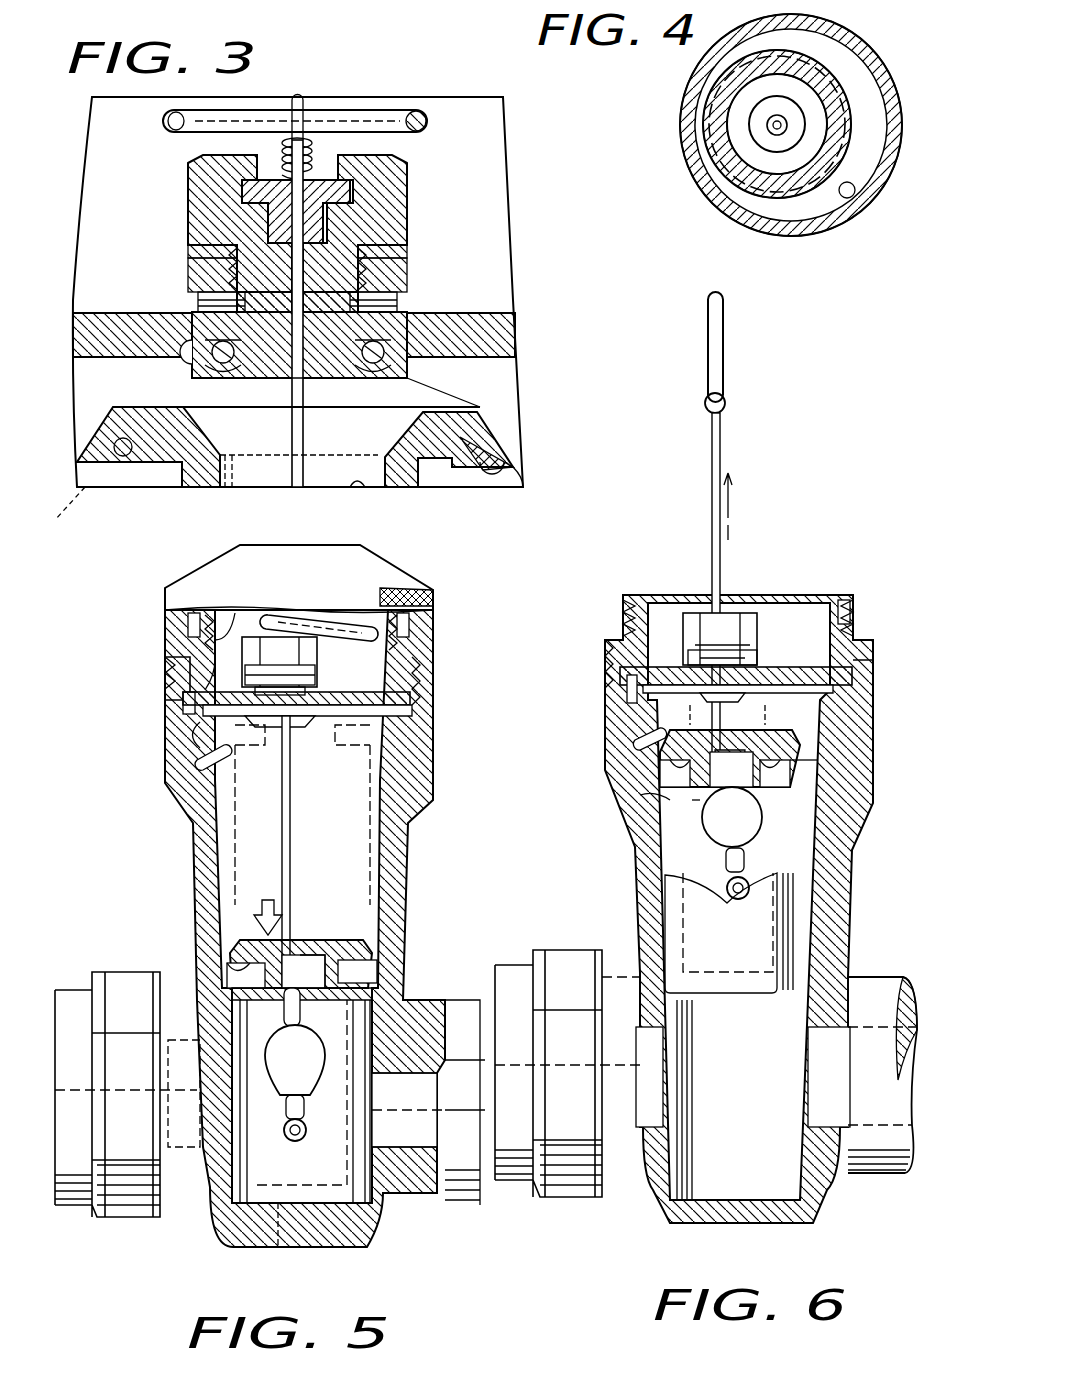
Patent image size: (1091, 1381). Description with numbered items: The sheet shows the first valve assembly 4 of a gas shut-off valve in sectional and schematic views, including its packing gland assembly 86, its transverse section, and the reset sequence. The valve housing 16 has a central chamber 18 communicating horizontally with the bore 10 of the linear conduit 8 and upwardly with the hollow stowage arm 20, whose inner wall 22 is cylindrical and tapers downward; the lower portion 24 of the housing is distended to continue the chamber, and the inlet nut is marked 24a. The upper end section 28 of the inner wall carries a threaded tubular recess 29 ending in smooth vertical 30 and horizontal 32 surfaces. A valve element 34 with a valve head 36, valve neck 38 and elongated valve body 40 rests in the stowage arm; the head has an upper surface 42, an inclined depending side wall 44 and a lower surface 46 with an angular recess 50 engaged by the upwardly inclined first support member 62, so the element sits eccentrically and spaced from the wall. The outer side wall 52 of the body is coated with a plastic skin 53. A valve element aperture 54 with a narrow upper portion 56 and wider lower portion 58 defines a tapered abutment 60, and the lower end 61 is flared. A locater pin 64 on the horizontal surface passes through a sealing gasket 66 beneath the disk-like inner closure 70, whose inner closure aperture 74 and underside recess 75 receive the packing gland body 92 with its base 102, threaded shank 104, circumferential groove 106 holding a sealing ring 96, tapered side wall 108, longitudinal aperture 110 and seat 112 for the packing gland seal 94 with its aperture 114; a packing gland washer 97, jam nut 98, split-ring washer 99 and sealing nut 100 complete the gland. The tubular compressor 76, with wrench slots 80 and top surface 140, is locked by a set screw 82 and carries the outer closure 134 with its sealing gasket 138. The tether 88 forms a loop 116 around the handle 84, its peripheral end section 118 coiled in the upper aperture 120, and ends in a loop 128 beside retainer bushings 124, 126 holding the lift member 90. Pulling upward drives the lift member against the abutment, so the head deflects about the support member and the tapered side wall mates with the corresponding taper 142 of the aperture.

In FIG. 5, the first valve assembly 4 is at (115, 659).
In FIG. 6, the first valve assembly 4 is at (886, 589).
In FIG. 5, the linear conduit 8 is at (420, 1185).
In FIG. 6, the linear conduit 8 is at (880, 1175).
In FIG. 5, the bore 10 is at (430, 1056).
In FIG. 6, the bore 10 is at (808, 1112).
In FIG. 5, the valve housing 16 is at (150, 849).
In FIG. 6, the valve housing 16 is at (610, 874).
In FIG. 5, the central chamber 18 is at (300, 1276).
In FIG. 6, the central chamber 18 is at (748, 1165).
In FIG. 4, the stowage arm 20 is at (885, 47).
In FIG. 5, the stowage arm 20 is at (410, 913).
In FIG. 6, the stowage arm 20 is at (861, 847).
In FIG. 4, the inner wall 22 is at (850, 198).
In FIG. 5, the inner wall 22 is at (380, 862).
In FIG. 6, the inner wall 22 is at (660, 810).
In FIG. 5, the lower portion 24 is at (222, 1233).
In FIG. 6, the inlet pipe nut 24a is at (655, 1205).
In FIG. 5, the upper end section 28 is at (445, 660).
In FIG. 6, the upper end section 28 is at (882, 638).
In FIG. 5, the threaded tubular recess 29 is at (165, 678).
In FIG. 6, the threaded tubular recess 29 is at (607, 650).
In FIG. 5, the vertical surface 30 is at (183, 703).
In FIG. 5, the horizontal surface 32 is at (170, 738).
In FIG. 4, the valve element 34 is at (853, 169).
In FIG. 5, the valve element 34 is at (354, 1122).
In FIG. 6, the valve element 34 is at (765, 1003).
In FIG. 3, the valve head 36 is at (508, 424).
In FIG. 5, the valve head 36 is at (228, 943).
In FIG. 6, the valve head 36 is at (805, 744).
In FIG. 3, the valve neck 38 is at (437, 473).
In FIG. 5, the valve neck 38 is at (350, 968).
In FIG. 6, the valve neck 38 is at (780, 775).
In FIG. 5, the elongated valve body 40 is at (355, 1078).
In FIG. 6, the elongated valve body 40 is at (858, 815).
In FIG. 3, the upper surface 42 is at (463, 410).
In FIG. 5, the upper surface 42 is at (342, 935).
In FIG. 6, the upper surface 42 is at (775, 730).
In FIG. 3, the depending side wall 44 is at (507, 447).
In FIG. 3, the lower surface 46 is at (420, 470).
In FIG. 3, the angular recess 50 is at (127, 460).
In FIG. 5, the angular recess 50 is at (245, 962).
In FIG. 6, the angular recess 50 is at (795, 755).
In FIG. 4, the outer side wall 52 is at (847, 95).
In FIG. 5, the outer side wall 52 is at (355, 1057).
In FIG. 6, the outer side wall 52 is at (795, 890).
In FIG. 4, the plastic skin 53 is at (847, 118).
In FIG. 6, the valve element aperture 54 is at (690, 846).
In FIG. 3, the upper portion 56 is at (357, 482).
In FIG. 5, the upper portion 56 is at (315, 960).
In FIG. 5, the lower portion 58 is at (307, 1212).
In FIG. 6, the lower portion 58 is at (685, 972).
In FIG. 5, the tapered abutment 60 is at (296, 1026).
In FIG. 5, the lower end 61 is at (335, 1230).
In FIG. 3, the first support member 62 is at (95, 512).
In FIG. 5, the first support member 62 is at (210, 760).
In FIG. 6, the first support member 62 is at (640, 740).
In FIG. 5, the locater pin 64 is at (253, 682).
In FIG. 6, the locater pin 64 is at (627, 695).
In FIG. 5, the sealing gasket 66 is at (430, 737).
In FIG. 6, the sealing gasket 66 is at (855, 690).
In FIG. 3, the inner closure 70 is at (93, 323).
In FIG. 5, the inner closure 70 is at (372, 705).
In FIG. 6, the inner closure 70 is at (665, 668).
In FIG. 3, the inner closure aperture 74 is at (260, 333).
In FIG. 5, the inner closure aperture 74 is at (285, 685).
In FIG. 6, the inner closure aperture 74 is at (735, 650).
In FIG. 3, the recess 75 is at (178, 363).
In FIG. 5, the tubular compressor 76 is at (213, 628).
In FIG. 6, the tubular compressor 76 is at (838, 605).
In FIG. 6, the wrench slots 80 is at (848, 595).
In FIG. 6, the set screw 82 is at (862, 640).
In FIG. 3, the handle 84 is at (388, 114).
In FIG. 5, the handle 84 is at (330, 622).
In FIG. 6, the handle 84 is at (725, 352).
In FIG. 3, the packing gland assembly 86 is at (429, 249).
In FIG. 5, the packing gland assembly 86 is at (322, 666).
In FIG. 6, the packing gland assembly 86 is at (740, 613).
In FIG. 3, the tether 88 is at (292, 470).
In FIG. 5, the tether 88 is at (290, 830).
In FIG. 6, the tether 88 is at (712, 498).
In FIG. 4, the lift member 90 is at (763, 128).
In FIG. 5, the lift member 90 is at (280, 1062).
In FIG. 6, the lift member 90 is at (745, 890).
In FIG. 3, the packing gland body 92 is at (337, 390).
In FIG. 5, the packing gland body 92 is at (310, 736).
In FIG. 3, the packing gland seal 94 is at (323, 215).
In FIG. 3, the sealing ring 96 is at (370, 370).
In FIG. 3, the packing gland washer 97 is at (397, 307).
In FIG. 6, the packing gland washer 97 is at (745, 660).
In FIG. 3, the packing gland jam nut 98 is at (203, 267).
In FIG. 3, the split-ring washer 99 is at (190, 250).
In FIG. 3, the packing gland sealing nut 100 is at (405, 167).
In FIG. 5, the packing gland sealing nut 100 is at (248, 640).
In FIG. 6, the packing gland sealing nut 100 is at (690, 613).
In FIG. 3, the base 102 is at (233, 380).
In FIG. 3, the shank 104 is at (217, 283).
In FIG. 3, the circumferential groove 106 is at (388, 357).
In FIG. 3, the side wall 108 is at (183, 372).
In FIG. 3, the longitudinal aperture 110 is at (403, 272).
In FIG. 3, the seat 112 is at (243, 200).
In FIG. 3, the aperture 114 is at (343, 200).
In FIG. 3, the loop 116 is at (298, 96).
In FIG. 6, the loop 116 is at (727, 403).
In FIG. 3, the peripheral end section 118 is at (312, 147).
In FIG. 3, the upper aperture 120 is at (282, 165).
In FIG. 4, the first retainer bushing 124 is at (773, 135).
In FIG. 6, the first retainer bushing 124 is at (715, 752).
In FIG. 5, the second retainer bushing 126 is at (305, 1138).
In FIG. 6, the loop 128 is at (750, 903).
In FIG. 5, the outer closure 134 is at (430, 584).
In FIG. 5, the sealing gasket 138 is at (190, 613).
In FIG. 6, the top surface 140 is at (640, 597).
In FIG. 3, the taper 142 is at (207, 437).